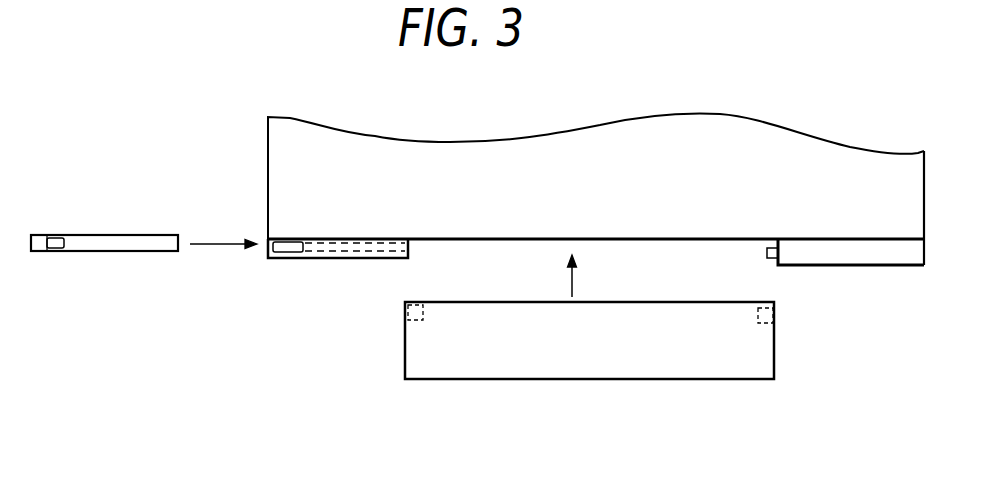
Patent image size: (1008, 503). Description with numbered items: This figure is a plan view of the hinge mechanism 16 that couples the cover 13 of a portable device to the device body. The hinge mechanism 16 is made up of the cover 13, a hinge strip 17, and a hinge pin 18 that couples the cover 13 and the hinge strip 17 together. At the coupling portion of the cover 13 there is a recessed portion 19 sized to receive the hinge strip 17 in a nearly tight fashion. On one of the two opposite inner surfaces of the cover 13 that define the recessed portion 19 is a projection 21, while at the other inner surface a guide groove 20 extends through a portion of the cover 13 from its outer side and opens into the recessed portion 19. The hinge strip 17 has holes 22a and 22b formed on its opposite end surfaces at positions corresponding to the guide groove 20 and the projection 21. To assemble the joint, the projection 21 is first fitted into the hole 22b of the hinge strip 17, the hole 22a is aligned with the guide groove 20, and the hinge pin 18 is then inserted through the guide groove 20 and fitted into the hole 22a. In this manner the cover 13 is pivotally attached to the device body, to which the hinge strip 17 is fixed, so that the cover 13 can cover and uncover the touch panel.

The cover 13 is at (273, 148).
The hinge mechanism 16 is at (385, 290).
The hinge strip 17 is at (765, 350).
The hinge pin 18 is at (98, 252).
The recessed portion 19 is at (698, 240).
The guide groove 20 is at (338, 247).
The projection 21 is at (780, 252).
The hole 22a is at (408, 318).
The hole 22b is at (760, 325).